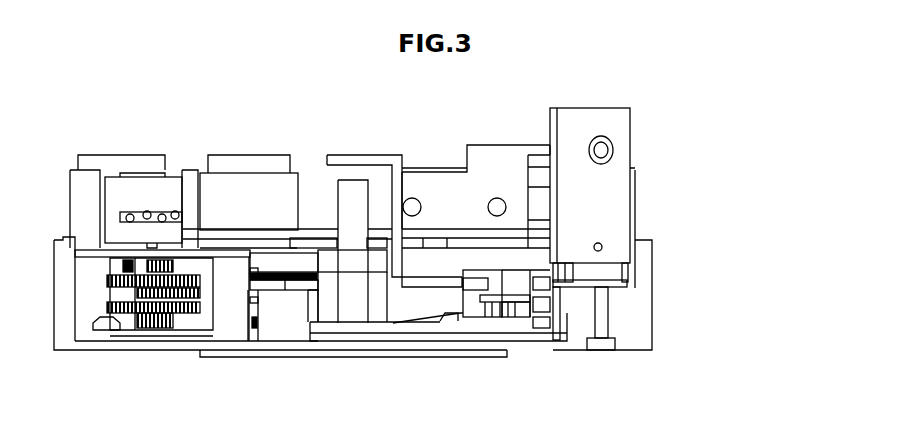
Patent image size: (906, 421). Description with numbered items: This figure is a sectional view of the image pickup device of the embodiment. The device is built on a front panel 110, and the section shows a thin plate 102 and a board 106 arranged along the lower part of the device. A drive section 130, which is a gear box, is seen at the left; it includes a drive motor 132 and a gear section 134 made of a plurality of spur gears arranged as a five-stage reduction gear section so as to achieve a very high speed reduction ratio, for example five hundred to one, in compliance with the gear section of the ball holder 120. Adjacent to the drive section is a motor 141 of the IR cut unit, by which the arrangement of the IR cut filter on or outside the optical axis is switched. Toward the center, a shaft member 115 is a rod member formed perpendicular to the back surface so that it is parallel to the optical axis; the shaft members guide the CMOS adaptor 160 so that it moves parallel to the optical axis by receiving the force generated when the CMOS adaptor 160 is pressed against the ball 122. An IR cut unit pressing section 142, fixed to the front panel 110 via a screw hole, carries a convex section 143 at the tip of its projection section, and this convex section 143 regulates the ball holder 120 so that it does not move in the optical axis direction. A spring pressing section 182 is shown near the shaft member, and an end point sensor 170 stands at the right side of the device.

The thin plate 102 is at (337, 351).
The board 106 is at (317, 229).
The front panel 110 is at (656, 348).
The shaft member 115 is at (353, 187).
The ball holder 120 is at (414, 339).
The ball 122 is at (451, 321).
The drive section 130 is at (234, 325).
The drive motor 132 is at (133, 190).
The gear section 134 is at (128, 315).
The motor 141 is at (248, 180).
The IR cut unit pressing section 142 is at (503, 308).
The convex section 143 is at (492, 302).
The CMOS adaptor 160 is at (383, 312).
The end point sensor 170 is at (596, 98).
The spring pressing section 182 is at (378, 156).